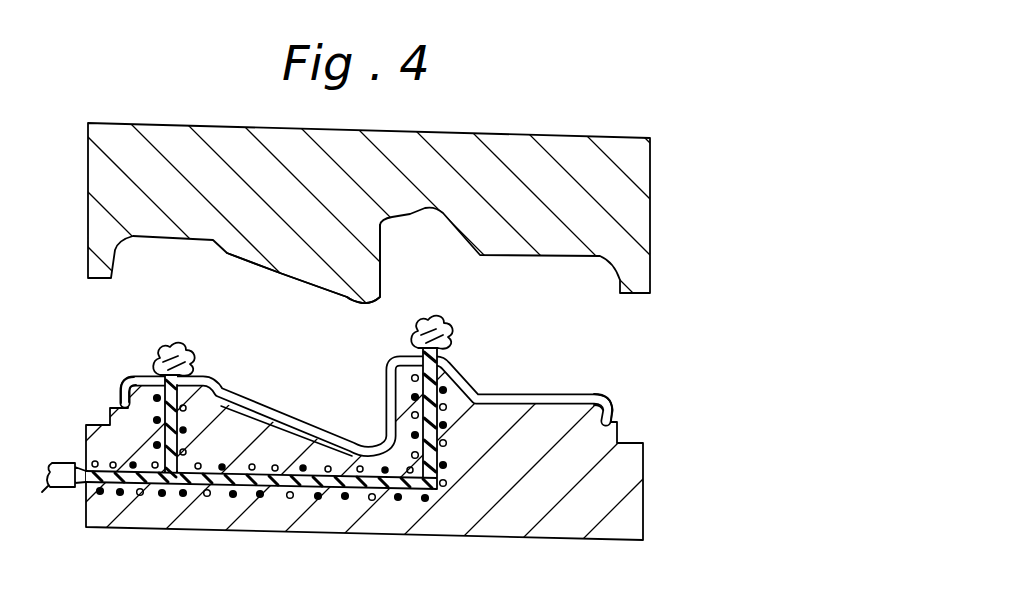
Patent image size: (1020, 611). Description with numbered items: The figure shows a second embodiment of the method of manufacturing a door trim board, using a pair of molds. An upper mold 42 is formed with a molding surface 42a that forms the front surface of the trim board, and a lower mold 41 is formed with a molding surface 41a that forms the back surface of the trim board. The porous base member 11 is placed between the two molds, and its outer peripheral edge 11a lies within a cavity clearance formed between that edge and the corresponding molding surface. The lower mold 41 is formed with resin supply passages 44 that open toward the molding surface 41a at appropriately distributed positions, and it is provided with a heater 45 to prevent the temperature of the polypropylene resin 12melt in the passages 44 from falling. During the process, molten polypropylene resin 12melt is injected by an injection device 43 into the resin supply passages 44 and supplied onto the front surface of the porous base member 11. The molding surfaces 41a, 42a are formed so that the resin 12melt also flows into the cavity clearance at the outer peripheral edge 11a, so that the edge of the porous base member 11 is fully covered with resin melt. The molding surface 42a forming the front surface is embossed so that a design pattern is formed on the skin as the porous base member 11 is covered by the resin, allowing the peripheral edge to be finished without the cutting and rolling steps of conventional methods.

The upper mold 42 is at (638, 226).
The molding surface 42a is at (283, 276).
The lower mold 41 is at (625, 483).
The molding surface 41a is at (330, 443).
The porous base member 11 is at (558, 393).
The outer peripheral edge 11a is at (118, 398).
The molten polypropylene resin 12melt is at (187, 354).
The injection device 43 is at (58, 466).
The resin supply passages 44 is at (315, 484).
The heater 45 is at (372, 500).